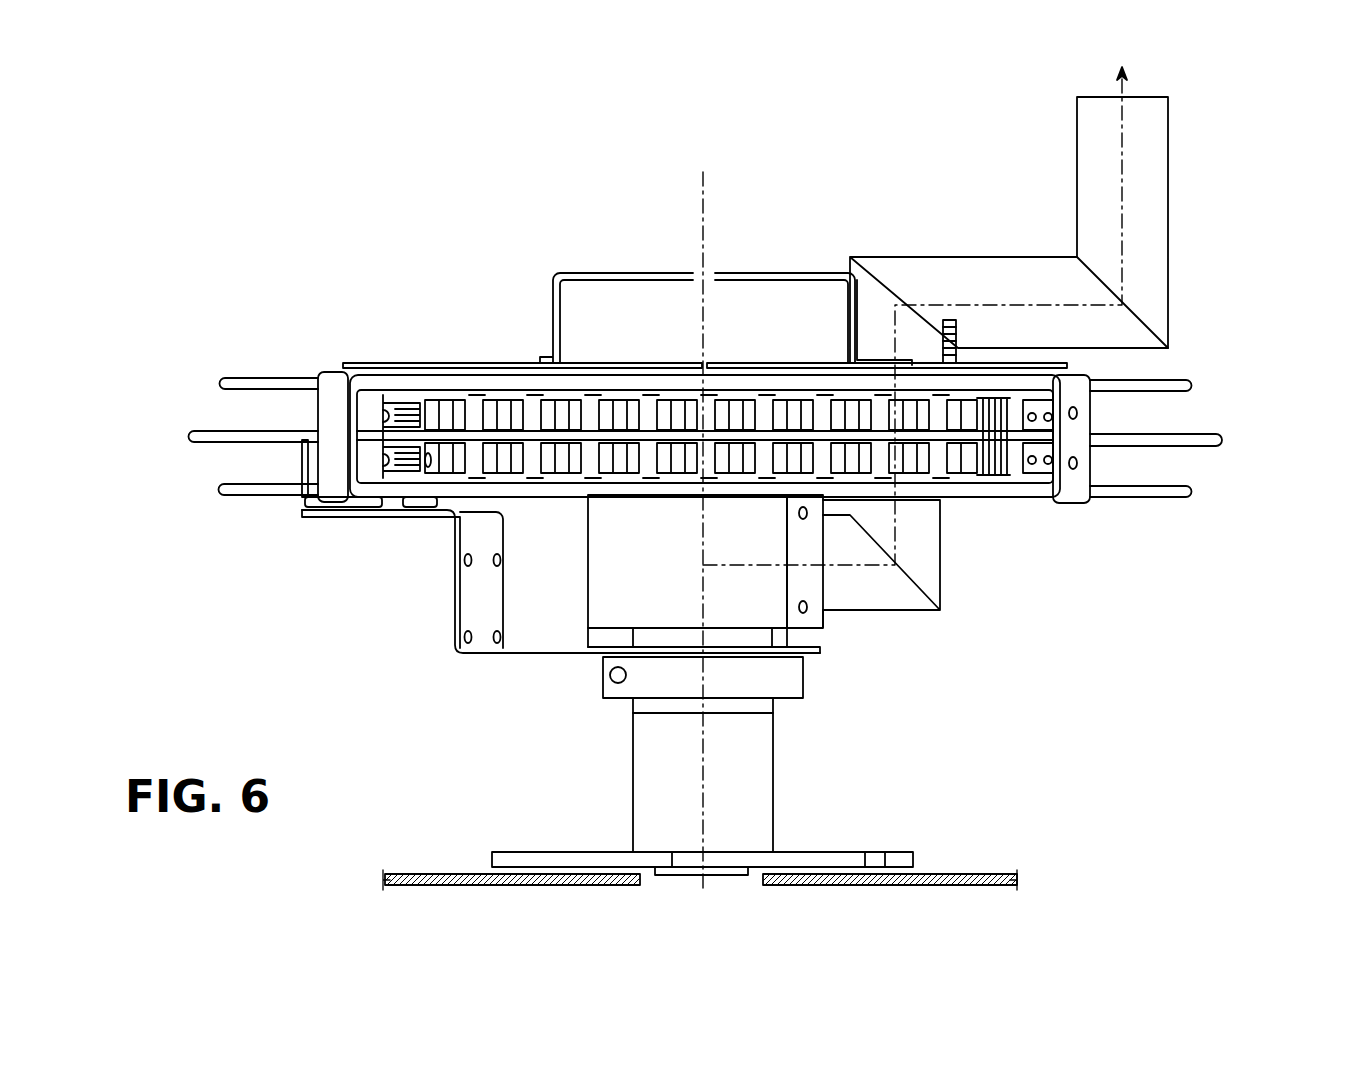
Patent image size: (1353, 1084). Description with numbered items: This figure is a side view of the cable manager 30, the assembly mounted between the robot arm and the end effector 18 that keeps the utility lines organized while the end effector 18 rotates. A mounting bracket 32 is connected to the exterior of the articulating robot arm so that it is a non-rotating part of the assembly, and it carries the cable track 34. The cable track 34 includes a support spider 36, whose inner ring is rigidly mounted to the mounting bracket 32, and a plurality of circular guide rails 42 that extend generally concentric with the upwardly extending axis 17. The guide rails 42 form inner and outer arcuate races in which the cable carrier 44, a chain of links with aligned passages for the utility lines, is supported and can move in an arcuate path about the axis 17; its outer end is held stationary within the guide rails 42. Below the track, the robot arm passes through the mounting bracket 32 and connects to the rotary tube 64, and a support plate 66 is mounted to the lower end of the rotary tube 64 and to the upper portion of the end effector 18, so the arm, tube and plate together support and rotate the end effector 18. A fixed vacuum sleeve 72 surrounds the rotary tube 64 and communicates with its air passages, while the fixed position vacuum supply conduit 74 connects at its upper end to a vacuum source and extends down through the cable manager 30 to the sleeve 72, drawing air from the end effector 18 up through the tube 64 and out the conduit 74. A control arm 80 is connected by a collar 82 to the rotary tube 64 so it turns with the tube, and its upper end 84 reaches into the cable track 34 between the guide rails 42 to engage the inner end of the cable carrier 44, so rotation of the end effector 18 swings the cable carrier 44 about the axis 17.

The upwardly extending axis 17 is at (703, 208).
The end effector 18 is at (448, 875).
The cable manager 30 is at (1232, 445).
The mounting bracket 32 is at (615, 273).
The cable track 34 is at (218, 377).
The support spider 36 is at (440, 365).
The circular guide rails 42 is at (217, 487).
The cable carrier 44 is at (950, 480).
The rotary tube 64 is at (773, 747).
The support plate 66 is at (568, 857).
The fixed vacuum sleeve 72 is at (585, 600).
The fixed position vacuum supply conduit 74 is at (1072, 192).
The control arm 80 is at (455, 573).
The collar 82 is at (803, 685).
The upper end of the control arm 84 is at (345, 513).